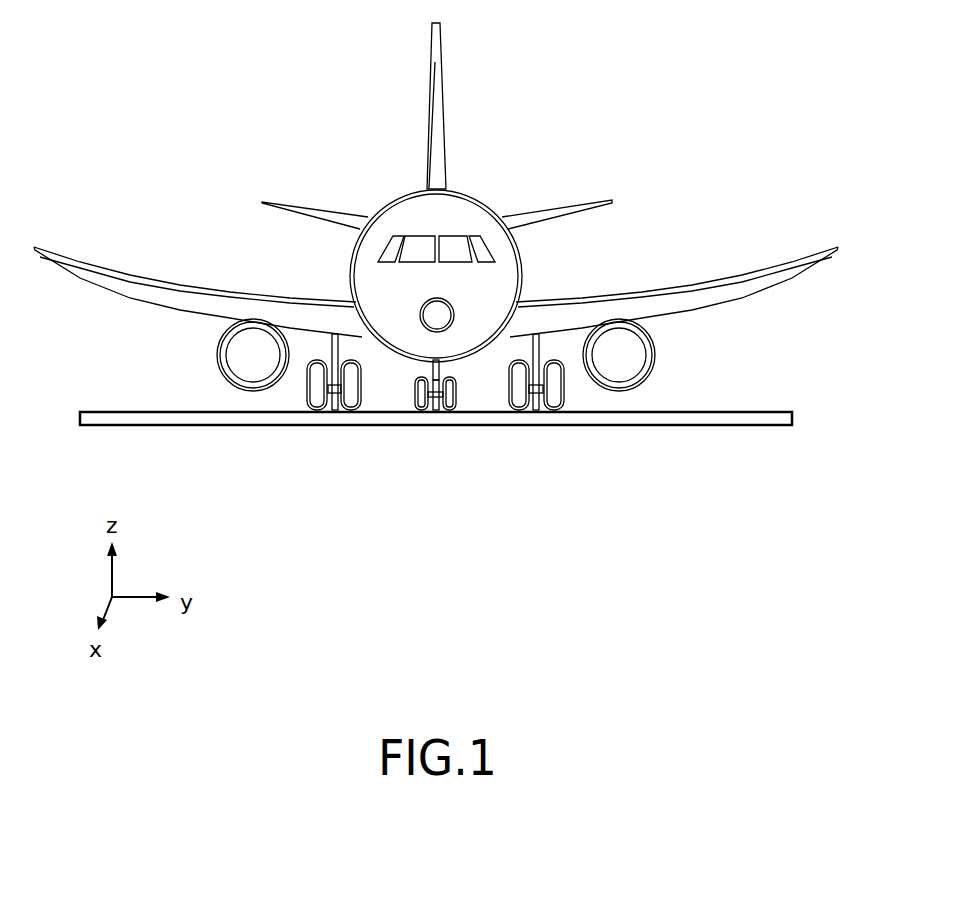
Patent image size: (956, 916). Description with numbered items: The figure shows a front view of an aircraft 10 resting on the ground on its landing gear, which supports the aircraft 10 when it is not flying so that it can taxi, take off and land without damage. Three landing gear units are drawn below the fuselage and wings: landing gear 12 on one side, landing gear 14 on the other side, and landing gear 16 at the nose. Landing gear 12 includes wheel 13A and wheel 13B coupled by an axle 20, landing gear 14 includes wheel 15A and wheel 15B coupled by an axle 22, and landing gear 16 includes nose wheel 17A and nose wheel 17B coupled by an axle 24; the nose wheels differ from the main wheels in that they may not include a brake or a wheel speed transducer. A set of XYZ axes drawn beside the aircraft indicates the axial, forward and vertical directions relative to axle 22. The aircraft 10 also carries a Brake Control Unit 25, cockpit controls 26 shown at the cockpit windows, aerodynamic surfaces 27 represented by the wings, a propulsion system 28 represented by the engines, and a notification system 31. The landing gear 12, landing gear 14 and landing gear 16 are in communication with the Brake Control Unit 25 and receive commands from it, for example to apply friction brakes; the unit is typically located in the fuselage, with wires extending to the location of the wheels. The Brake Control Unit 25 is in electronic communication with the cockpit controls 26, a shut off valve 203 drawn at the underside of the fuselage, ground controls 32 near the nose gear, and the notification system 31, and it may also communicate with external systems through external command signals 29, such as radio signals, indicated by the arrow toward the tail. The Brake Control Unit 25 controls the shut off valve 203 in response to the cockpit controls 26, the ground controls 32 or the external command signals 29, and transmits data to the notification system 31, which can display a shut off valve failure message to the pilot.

The aircraft 10 is at (294, 112).
The landing gear 12 is at (625, 382).
The wheel 13A is at (568, 393).
The wheel 13B is at (523, 363).
The landing gear 14 is at (320, 447).
The wheel 15A is at (316, 411).
The wheel 15B is at (352, 411).
The landing gear 16 is at (476, 410).
The nose wheel 17A is at (458, 400).
The nose wheel 17B is at (416, 411).
The axle 20 is at (536, 392).
The axle 22 is at (335, 411).
The axle 24 is at (435, 411).
The Brake Control Unit (BCU) 25 is at (405, 316).
The cockpit controls 26 is at (388, 248).
The aerodynamic surfaces 27 is at (690, 294).
The propulsion system 28 is at (656, 353).
The external command signals 29 is at (462, 142).
The notification system 31 is at (482, 246).
The ground controls 32 is at (428, 362).
The shut off valve 203 is at (433, 345).